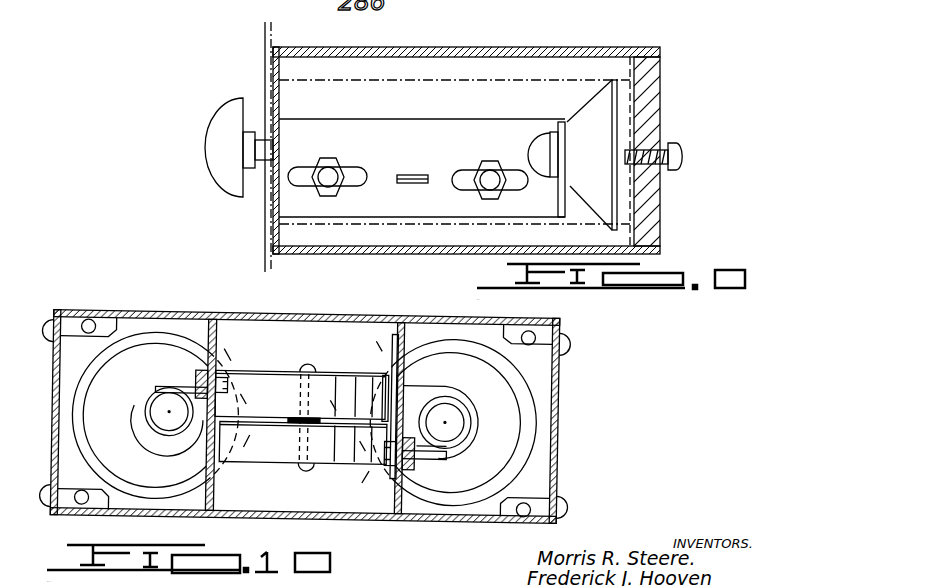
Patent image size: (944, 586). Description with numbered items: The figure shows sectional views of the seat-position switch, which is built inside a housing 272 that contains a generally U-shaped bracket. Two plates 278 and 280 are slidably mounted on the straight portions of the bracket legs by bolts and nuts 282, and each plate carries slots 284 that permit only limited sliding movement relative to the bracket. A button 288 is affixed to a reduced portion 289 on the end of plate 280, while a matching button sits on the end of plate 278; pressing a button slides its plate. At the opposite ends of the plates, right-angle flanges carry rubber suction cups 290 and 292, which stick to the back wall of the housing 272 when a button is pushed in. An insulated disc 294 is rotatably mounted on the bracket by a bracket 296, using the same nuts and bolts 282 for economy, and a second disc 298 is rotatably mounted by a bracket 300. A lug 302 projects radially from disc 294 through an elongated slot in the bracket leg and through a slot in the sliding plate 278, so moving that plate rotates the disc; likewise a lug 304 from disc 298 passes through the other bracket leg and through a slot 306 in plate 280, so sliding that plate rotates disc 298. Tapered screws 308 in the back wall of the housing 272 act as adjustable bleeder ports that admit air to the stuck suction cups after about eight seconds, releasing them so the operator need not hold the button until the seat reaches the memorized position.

In FIG. 9, the housing 272 is at (577, 54).
In FIG. 10, the housing 272 is at (110, 292).
In FIG. 10, the plate 278 is at (203, 372).
In FIG. 9, the plate 280 is at (452, 113).
In FIG. 10, the plate 280 is at (410, 390).
In FIG. 9, the bolts and nuts 282 is at (335, 140).
In FIG. 10, the bolts and nuts 282 is at (417, 468).
In FIG. 9, the slots 284 is at (470, 172).
In FIG. 9, the button 288 is at (213, 136).
In FIG. 9, the reduced portion 289 is at (262, 124).
In FIG. 10, the rubber suction cup 290 is at (133, 490).
In FIG. 9, the rubber suction cup 292 is at (586, 106).
In FIG. 10, the rubber suction cup 292 is at (463, 346).
In FIG. 10, the insulated disc 294 is at (323, 387).
In FIG. 10, the bracket 296 is at (257, 370).
In FIG. 10, the second disc 298 is at (275, 450).
In FIG. 10, the bracket 300 is at (348, 470).
In FIG. 10, the lug 302 is at (176, 388).
In FIG. 9, the lug 304 is at (427, 175).
In FIG. 10, the lug 304 is at (456, 455).
In FIG. 9, the slot 306 is at (408, 184).
In FIG. 9, the tapered screws 308 is at (675, 146).